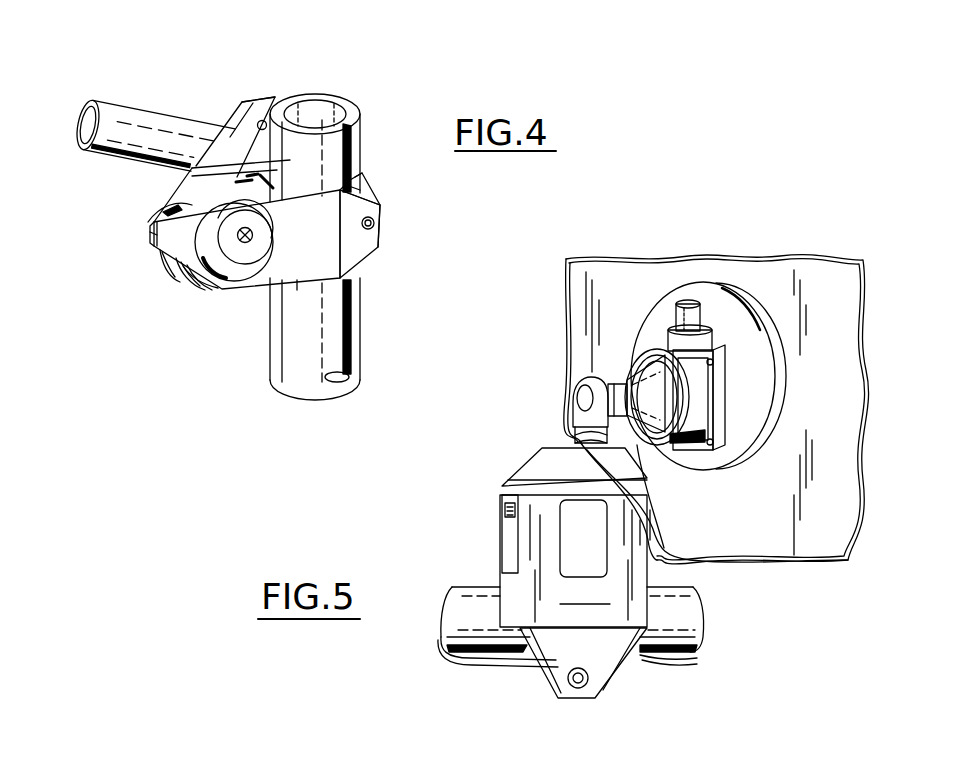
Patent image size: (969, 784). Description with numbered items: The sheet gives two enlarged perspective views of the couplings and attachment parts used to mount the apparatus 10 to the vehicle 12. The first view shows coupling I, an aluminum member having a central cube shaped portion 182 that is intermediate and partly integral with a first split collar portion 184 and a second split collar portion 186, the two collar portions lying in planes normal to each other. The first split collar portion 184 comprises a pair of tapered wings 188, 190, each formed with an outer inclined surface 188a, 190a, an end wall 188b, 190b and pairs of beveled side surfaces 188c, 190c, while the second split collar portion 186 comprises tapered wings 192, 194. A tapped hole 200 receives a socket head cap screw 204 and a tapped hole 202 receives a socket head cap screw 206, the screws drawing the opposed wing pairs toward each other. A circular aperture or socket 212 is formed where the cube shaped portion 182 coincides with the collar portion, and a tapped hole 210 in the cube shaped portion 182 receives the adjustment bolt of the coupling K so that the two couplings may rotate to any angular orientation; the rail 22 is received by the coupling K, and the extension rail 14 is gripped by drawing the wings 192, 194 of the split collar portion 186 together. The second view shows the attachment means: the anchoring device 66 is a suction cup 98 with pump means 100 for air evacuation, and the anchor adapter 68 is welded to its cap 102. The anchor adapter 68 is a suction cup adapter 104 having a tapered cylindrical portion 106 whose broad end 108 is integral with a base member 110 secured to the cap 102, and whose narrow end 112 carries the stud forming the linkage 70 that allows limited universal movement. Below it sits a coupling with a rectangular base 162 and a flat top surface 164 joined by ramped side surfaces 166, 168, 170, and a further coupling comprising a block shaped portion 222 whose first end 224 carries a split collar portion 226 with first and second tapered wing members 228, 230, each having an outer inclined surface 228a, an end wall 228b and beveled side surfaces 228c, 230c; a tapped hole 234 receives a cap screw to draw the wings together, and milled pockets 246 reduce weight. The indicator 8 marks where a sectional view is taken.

In FIG. 5, the section line 8- 8 is at (633, 493).
In FIG. 4, the apparatus 10 is at (216, 202).
In FIG. 5, the vehicle 12 is at (520, 443).
In FIG. 4, the extension rail 14 is at (311, 372).
In FIG. 4, the rail 22 is at (140, 120).
In FIG. 5, the anchoring device 66 is at (780, 351).
In FIG. 5, the anchor adapter 68 is at (584, 330).
In FIG. 5, the linkage 70 is at (566, 393).
In FIG. 5, the suction cup 98 is at (710, 294).
In FIG. 5, the pump means 100 is at (688, 302).
In FIG. 5, the cap 102 is at (697, 368).
In FIG. 5, the suction cup adapter 104 is at (582, 366).
In FIG. 5, the tapered cylindrical portion 106 is at (668, 416).
In FIG. 5, the broad end 108 is at (670, 402).
In FIG. 5, the base member 110 is at (670, 368).
In FIG. 5, the narrow end 112 is at (660, 468).
In FIG. 5, the rectangular base 162 is at (503, 491).
In FIG. 5, the flat top surface 164 is at (554, 448).
In FIG. 5, the ramped side surface 166 is at (523, 466).
In FIG. 5, the ramped side surface 168 is at (657, 503).
In FIG. 5, the ramped side surface 170 is at (672, 553).
In FIG. 4, the central cube shaped portion 182 is at (298, 284).
In FIG. 4, the first split collar portion 184 is at (187, 270).
In FIG. 4, the second split collar portion 186 is at (374, 193).
In FIG. 4, the tapered wing 188 is at (224, 106).
In FIG. 4, the outer inclined surface 188a is at (200, 166).
In FIG. 4, the end wall 188b is at (147, 250).
In FIG. 4, the beveled side surfaces 188c is at (180, 193).
In FIG. 4, the tapered wing 190 is at (173, 262).
In FIG. 4, the outer inclined surface 190a is at (213, 282).
In FIG. 4, the end wall 190b is at (157, 252).
In FIG. 4, the beveled side surfaces 190c is at (193, 273).
In FIG. 4, the tapered wing 192 is at (362, 175).
In FIG. 4, the tapered wing 194 is at (360, 189).
In FIG. 4, the tapped hole 200 is at (170, 213).
In FIG. 4, the tapped hole 202 is at (374, 223).
In FIG. 4, the socket head cap screw 204 is at (150, 230).
In FIG. 4, the socket head cap screw 206 is at (377, 235).
In FIG. 4, the tapped hole 210 is at (265, 252).
In FIG. 4, the circular aperture 212 is at (253, 235).
In FIG. 5, the block shaped portion 222 is at (573, 561).
In FIG. 5, the first end 224 is at (608, 690).
In FIG. 5, the split collar portion 226 is at (622, 665).
In FIG. 5, the first tapered wing member 228 is at (540, 628).
In FIG. 5, the outer inclined surface 228a is at (587, 700).
In FIG. 5, the end wall 228b is at (577, 700).
In FIG. 5, the beveled side surfaces 228c is at (550, 683).
In FIG. 5, the second tapered wing member 230 is at (527, 674).
In FIG. 5, the beveled side surfaces 230c is at (455, 661).
In FIG. 5, the tapped hole 234 is at (581, 668).
In FIG. 5, the milled pockets 246 is at (578, 527).
In FIG. 4, the coupling K is at (260, 73).
In FIG. 4, the coupling I is at (424, 243).
In FIG. 5, the coupling I is at (482, 344).